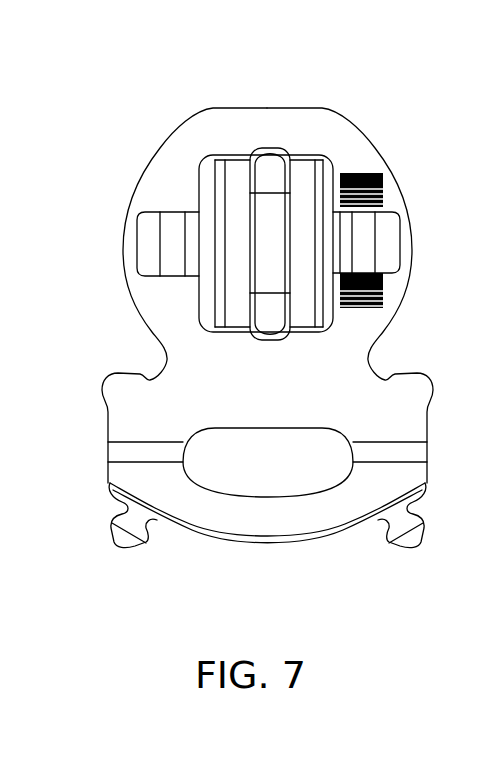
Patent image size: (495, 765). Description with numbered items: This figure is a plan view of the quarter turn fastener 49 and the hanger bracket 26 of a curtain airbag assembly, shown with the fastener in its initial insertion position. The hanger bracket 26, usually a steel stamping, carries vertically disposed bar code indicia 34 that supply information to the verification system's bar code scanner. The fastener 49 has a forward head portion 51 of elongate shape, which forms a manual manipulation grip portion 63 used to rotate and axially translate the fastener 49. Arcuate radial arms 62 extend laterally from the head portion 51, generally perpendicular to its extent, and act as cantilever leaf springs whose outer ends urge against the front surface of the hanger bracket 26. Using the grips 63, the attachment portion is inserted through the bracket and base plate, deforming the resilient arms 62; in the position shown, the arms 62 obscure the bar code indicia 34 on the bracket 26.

The hanger bracket 26 is at (274, 554).
The bar code indicia 34 is at (370, 172).
The quarter turn fastener 49 is at (306, 146).
The head portion 51 is at (280, 262).
The arcuate radial arms 62 is at (385, 238).
The manual manipulation grip portion 63 is at (243, 175).